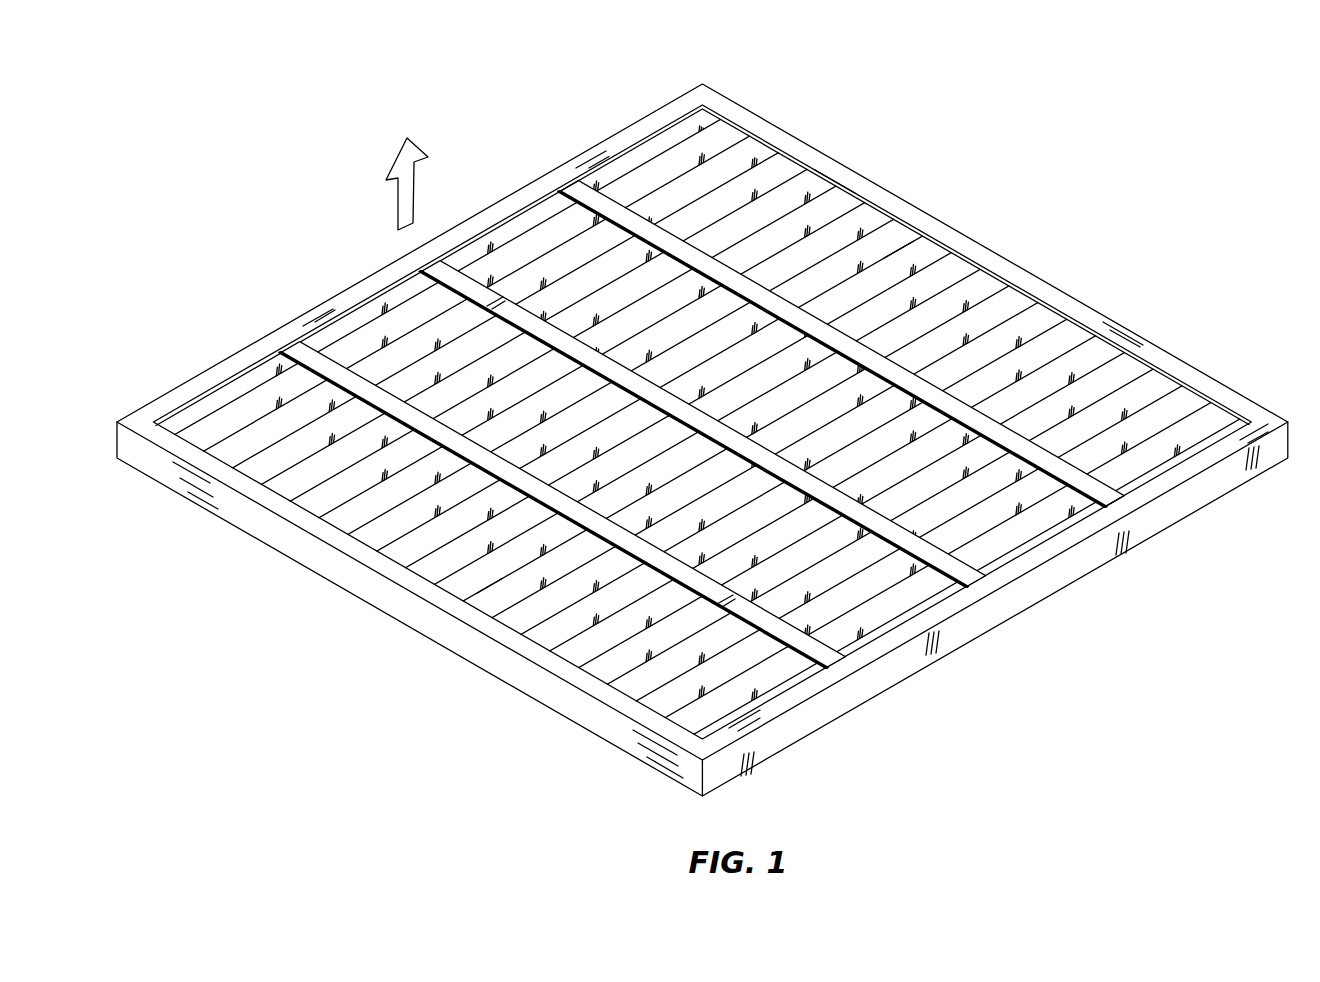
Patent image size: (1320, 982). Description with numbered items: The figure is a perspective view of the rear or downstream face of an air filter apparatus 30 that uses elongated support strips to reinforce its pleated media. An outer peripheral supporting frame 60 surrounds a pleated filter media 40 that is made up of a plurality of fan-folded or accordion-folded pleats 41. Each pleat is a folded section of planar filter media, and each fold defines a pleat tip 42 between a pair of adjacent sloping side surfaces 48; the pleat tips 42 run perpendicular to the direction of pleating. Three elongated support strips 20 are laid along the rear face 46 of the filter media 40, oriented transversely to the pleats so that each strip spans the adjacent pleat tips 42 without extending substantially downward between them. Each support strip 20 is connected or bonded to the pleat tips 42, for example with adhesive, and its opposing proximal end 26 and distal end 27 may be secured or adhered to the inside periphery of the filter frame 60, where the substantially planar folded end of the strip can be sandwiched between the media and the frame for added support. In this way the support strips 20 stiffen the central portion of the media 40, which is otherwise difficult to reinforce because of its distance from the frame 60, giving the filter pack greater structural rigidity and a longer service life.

The air filter apparatus 30 is at (510, 140).
The filter frame 60 is at (1173, 515).
The filter media 40 is at (1005, 303).
The pleats 41 is at (897, 247).
The pleat tips 42 is at (735, 217).
The sloping side surfaces 48 is at (757, 236).
The elongated support strips 20 is at (866, 530).
The proximal end 26 is at (590, 190).
The distal end 27 is at (1107, 494).
The rear face 46 is at (465, 565).